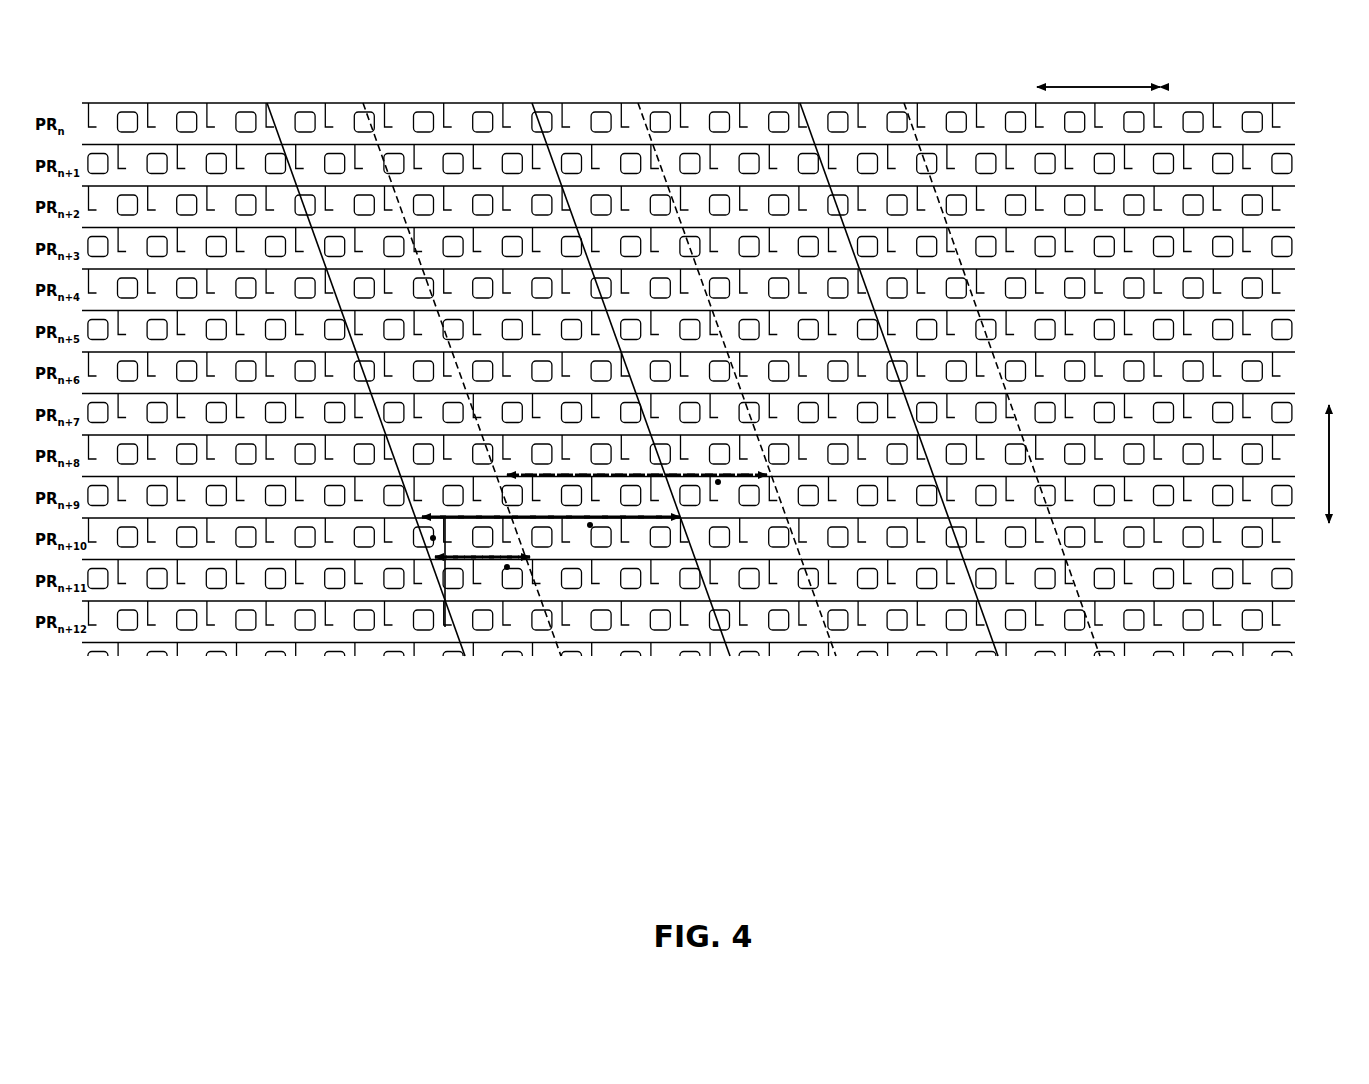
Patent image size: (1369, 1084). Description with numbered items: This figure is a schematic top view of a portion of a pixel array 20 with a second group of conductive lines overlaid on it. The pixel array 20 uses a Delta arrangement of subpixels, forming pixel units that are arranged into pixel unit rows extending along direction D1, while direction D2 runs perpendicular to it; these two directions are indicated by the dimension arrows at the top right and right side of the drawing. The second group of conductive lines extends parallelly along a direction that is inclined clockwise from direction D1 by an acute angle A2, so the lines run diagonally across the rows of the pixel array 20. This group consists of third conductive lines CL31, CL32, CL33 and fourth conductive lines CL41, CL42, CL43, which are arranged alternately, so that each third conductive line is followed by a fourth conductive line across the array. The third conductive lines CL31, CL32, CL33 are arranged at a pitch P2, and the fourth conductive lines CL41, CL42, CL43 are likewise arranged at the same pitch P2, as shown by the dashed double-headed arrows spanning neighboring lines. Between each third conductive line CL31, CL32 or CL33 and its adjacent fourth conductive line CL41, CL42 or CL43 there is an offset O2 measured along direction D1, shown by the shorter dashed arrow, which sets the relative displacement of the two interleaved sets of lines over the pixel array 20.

The pixel array 20 is at (152, 79).
The third conductive line CL31 is at (356, 364).
The fourth conductive line CL41 is at (452, 364).
The third conductive line CL32 is at (620, 364).
The fourth conductive line CL42 is at (721, 364).
The third conductive line CL33 is at (889, 364).
The fourth conductive line CL43 is at (988, 364).
The direction D1 is at (1098, 71).
The direction D2 is at (1348, 464).
The acute angle A2 is at (433, 538).
The offset O2 is at (507, 567).
The pitch P2 is at (590, 525).